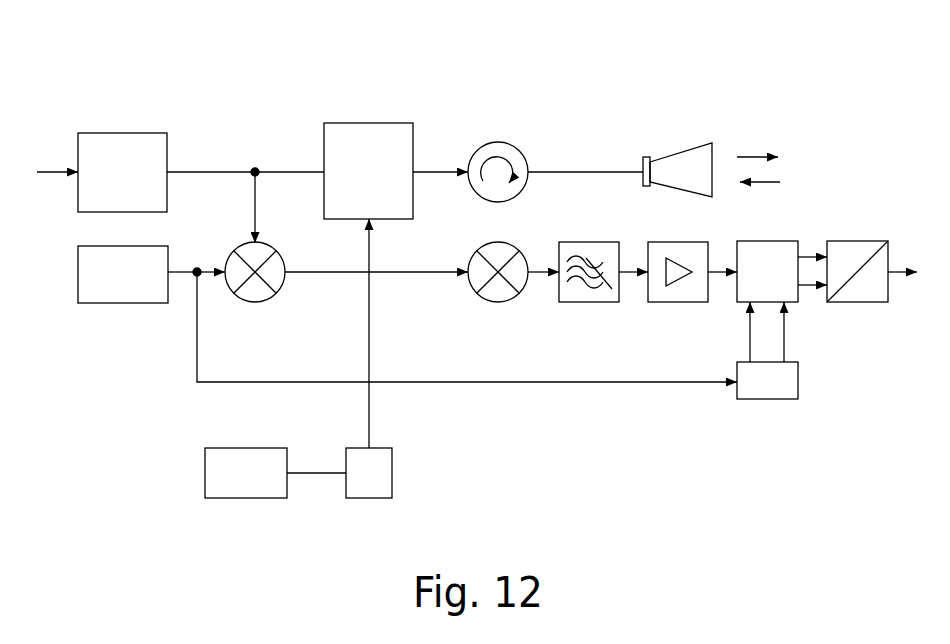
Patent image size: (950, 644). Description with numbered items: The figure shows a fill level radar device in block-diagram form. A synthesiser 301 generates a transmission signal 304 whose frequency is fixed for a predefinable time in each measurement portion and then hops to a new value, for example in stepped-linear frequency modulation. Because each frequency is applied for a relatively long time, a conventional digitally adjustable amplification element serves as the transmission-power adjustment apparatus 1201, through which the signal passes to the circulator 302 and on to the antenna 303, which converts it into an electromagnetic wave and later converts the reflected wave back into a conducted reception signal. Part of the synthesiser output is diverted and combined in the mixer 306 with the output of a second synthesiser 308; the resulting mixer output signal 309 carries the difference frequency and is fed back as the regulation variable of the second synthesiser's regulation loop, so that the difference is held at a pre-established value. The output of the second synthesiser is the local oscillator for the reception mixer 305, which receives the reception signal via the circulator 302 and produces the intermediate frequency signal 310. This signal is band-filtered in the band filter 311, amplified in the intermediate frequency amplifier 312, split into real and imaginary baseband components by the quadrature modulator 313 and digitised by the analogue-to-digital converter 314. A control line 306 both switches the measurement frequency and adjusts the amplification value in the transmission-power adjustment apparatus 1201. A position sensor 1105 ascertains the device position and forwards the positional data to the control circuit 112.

The synthesiser 301 is at (120, 133).
The signal 304 is at (212, 172).
The transmission-power adjustment apparatus 1201 is at (368, 123).
The circulator 302 is at (498, 142).
The antenna 303 is at (643, 162).
The control line 306 is at (55, 175).
The second synthesiser 308 is at (122, 303).
The mixer output signal 309 is at (300, 272).
The reception mixer 305 is at (500, 303).
The intermediate frequency signal 310 is at (546, 276).
The band filter 311 is at (590, 303).
The intermediate frequency amplifier 312 is at (680, 303).
The quadrature modulator 313 is at (778, 241).
The analogue-to-digital converter 314 is at (860, 241).
The position sensor 1105 is at (246, 498).
The control circuit 112 is at (370, 498).